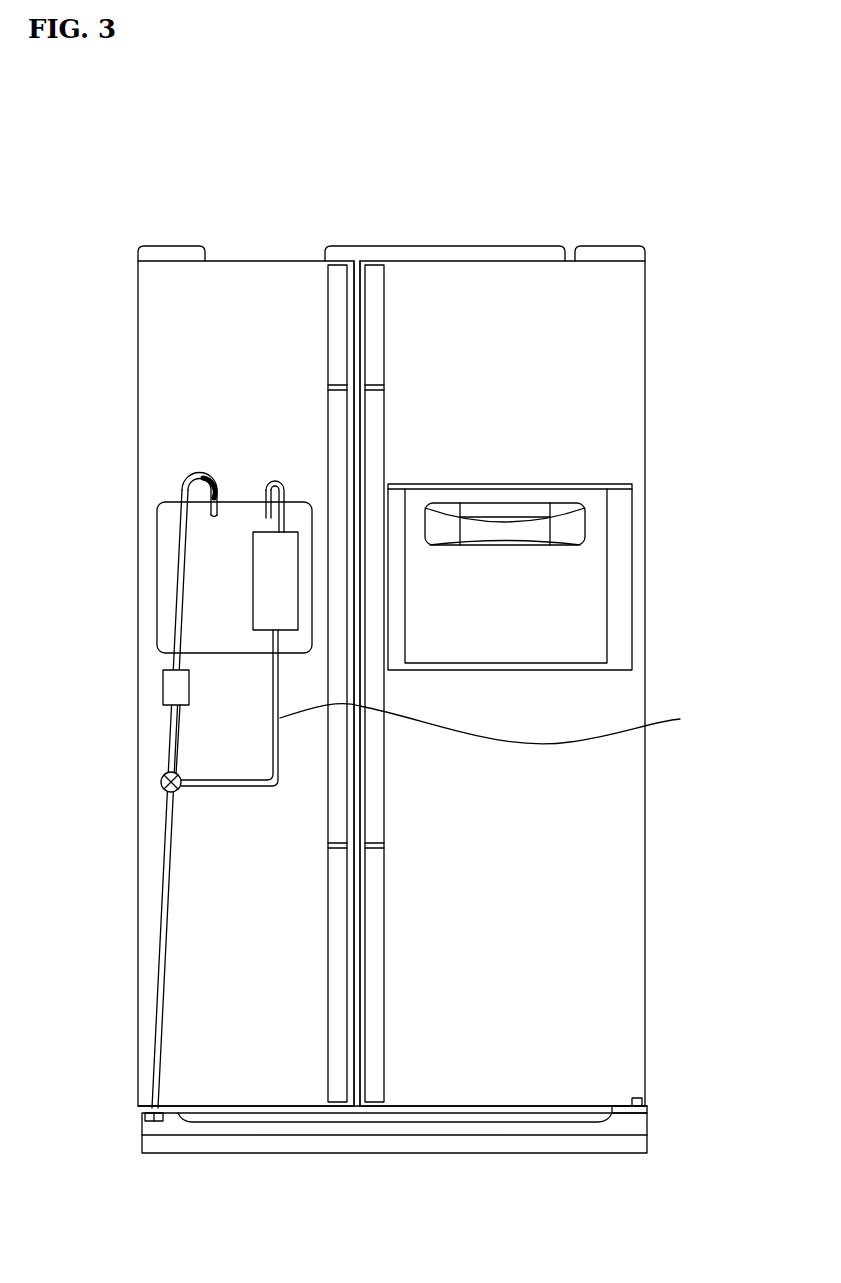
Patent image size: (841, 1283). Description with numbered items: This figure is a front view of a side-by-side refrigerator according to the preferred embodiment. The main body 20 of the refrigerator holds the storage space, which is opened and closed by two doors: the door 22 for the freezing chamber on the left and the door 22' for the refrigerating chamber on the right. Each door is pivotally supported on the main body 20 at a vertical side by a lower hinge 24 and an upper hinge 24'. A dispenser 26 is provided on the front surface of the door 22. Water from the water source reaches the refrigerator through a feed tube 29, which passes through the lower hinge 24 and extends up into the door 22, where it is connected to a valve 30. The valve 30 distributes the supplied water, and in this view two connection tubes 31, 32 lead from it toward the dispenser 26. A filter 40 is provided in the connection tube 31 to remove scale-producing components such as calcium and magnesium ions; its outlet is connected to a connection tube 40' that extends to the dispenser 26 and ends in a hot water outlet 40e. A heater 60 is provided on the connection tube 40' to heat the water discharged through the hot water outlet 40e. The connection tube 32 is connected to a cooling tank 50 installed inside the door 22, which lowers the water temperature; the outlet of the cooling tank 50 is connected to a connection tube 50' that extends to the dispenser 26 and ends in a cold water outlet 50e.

The main body 20 is at (272, 238).
The door 22 is at (197, 683).
The door 22' is at (549, 683).
The lower hinge 24 is at (396, 1109).
The upper hinge 24' is at (391, 208).
The dispenser 26 is at (146, 582).
The feed tube 29 is at (154, 1033).
The valve 30 is at (161, 783).
The connection tube 31 is at (176, 738).
The connection tube 32 is at (497, 723).
The filter 40 is at (145, 762).
The connection tube 40' is at (194, 465).
The hot water outlet 40e is at (214, 517).
The cooling tank 50 is at (255, 581).
The connection tube 50' is at (278, 474).
The cold water outlet 50e is at (266, 516).
The heater 60 is at (213, 497).